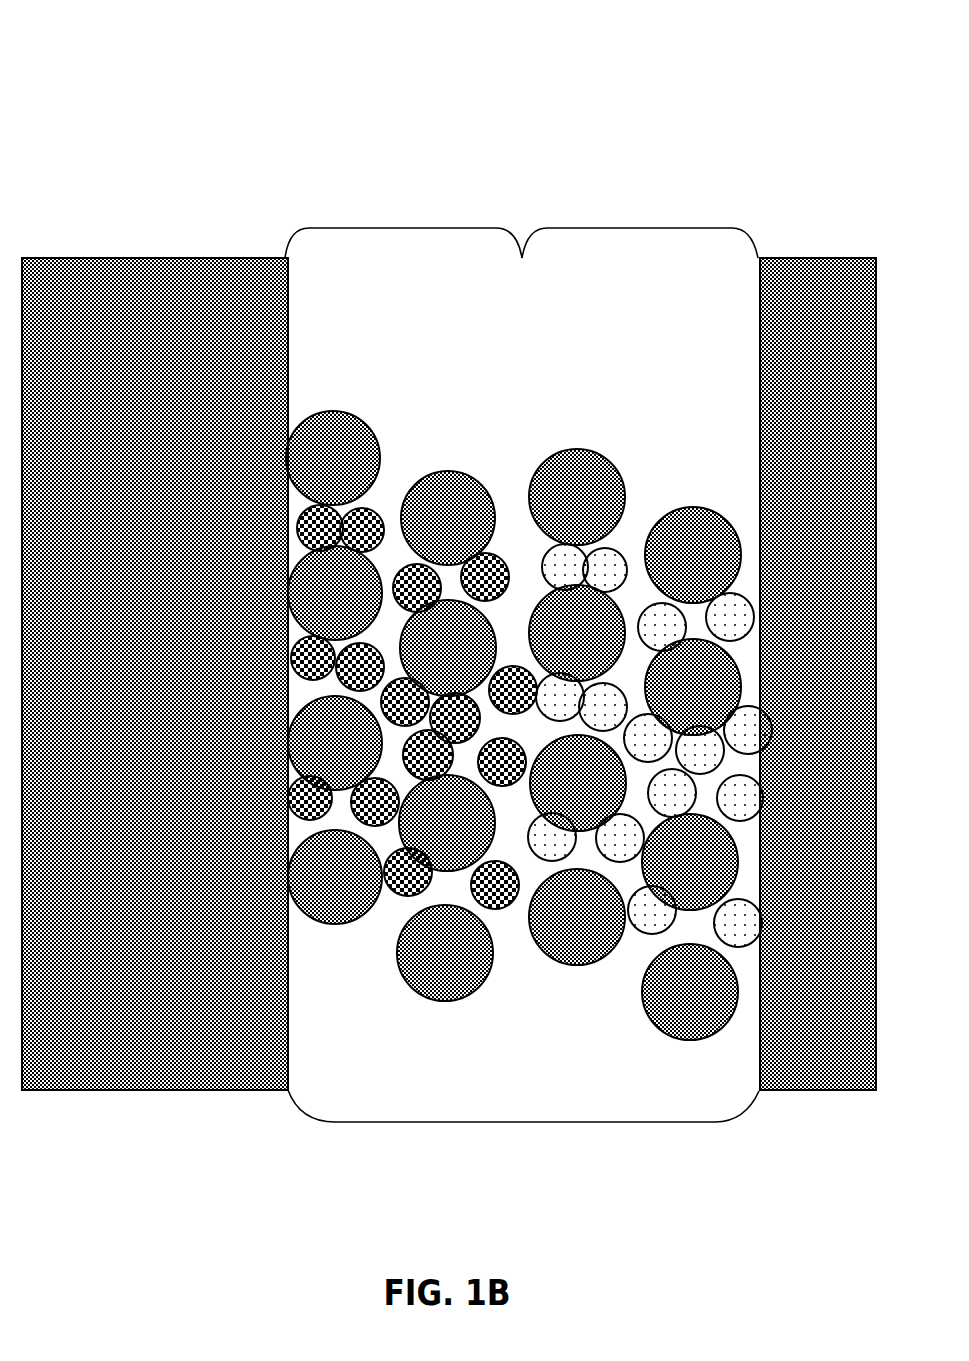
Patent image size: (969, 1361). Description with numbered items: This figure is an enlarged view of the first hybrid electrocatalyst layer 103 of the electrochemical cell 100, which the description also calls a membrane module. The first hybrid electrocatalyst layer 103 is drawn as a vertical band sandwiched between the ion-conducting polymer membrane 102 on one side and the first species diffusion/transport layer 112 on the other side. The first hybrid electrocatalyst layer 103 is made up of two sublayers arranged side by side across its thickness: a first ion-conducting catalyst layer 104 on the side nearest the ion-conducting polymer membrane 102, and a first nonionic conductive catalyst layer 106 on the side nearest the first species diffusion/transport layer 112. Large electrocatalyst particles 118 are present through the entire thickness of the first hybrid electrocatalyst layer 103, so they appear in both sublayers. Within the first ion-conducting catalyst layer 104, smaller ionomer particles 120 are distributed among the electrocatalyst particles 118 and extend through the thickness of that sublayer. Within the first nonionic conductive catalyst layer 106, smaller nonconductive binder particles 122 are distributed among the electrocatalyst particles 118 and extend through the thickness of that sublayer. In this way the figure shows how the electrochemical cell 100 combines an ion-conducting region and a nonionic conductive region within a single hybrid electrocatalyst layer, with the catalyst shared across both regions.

The electrochemical cell 100 is at (199, 46).
The ion-conducting polymer membrane 102 is at (114, 257).
The first hybrid electrocatalyst layer 103 is at (525, 1122).
The first ion-conducting catalyst layer 104 is at (401, 228).
The first nonionic conductive catalyst layer 106 is at (638, 228).
The first species diffusion/transport layer 112 is at (831, 257).
The electrocatalyst particles 118 is at (343, 411).
The ionomer particles 120 is at (372, 507).
The nonconductive binder particles 122 is at (637, 934).